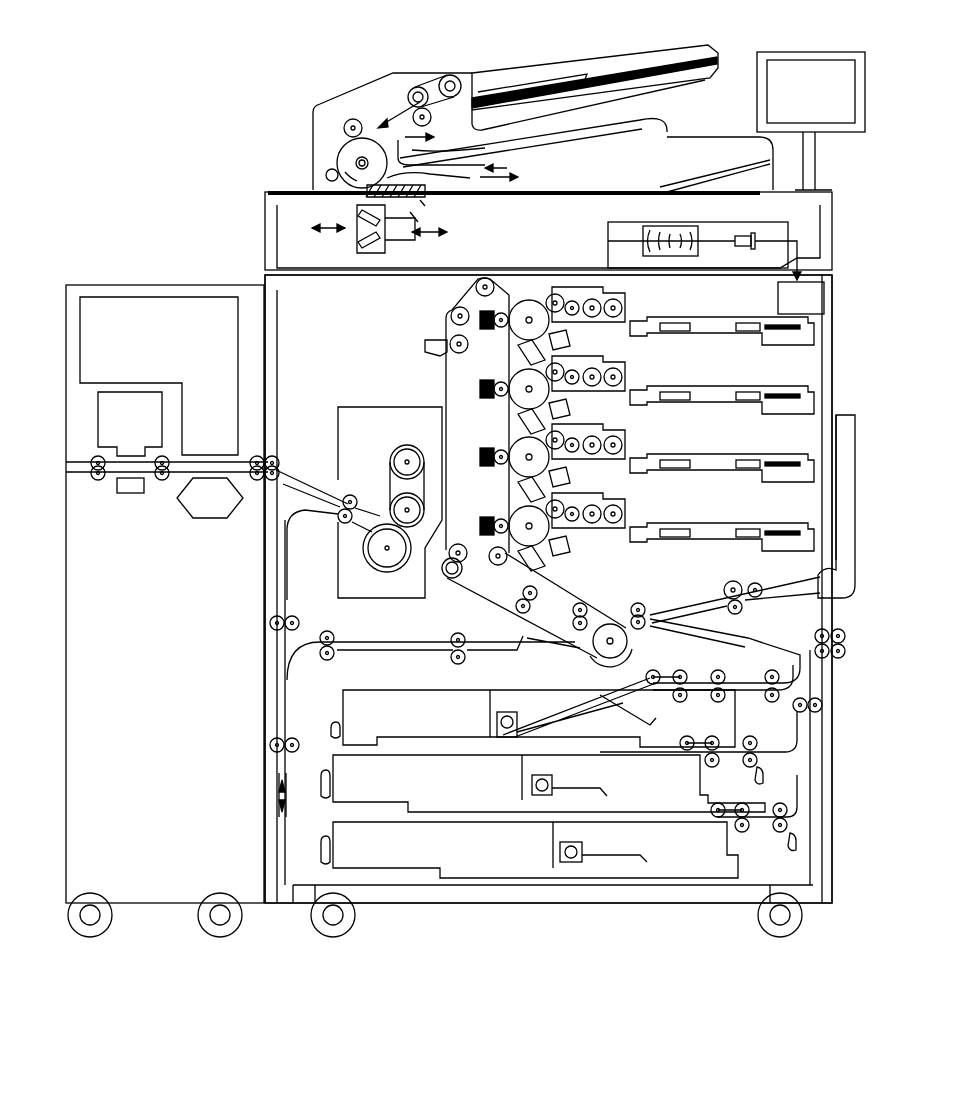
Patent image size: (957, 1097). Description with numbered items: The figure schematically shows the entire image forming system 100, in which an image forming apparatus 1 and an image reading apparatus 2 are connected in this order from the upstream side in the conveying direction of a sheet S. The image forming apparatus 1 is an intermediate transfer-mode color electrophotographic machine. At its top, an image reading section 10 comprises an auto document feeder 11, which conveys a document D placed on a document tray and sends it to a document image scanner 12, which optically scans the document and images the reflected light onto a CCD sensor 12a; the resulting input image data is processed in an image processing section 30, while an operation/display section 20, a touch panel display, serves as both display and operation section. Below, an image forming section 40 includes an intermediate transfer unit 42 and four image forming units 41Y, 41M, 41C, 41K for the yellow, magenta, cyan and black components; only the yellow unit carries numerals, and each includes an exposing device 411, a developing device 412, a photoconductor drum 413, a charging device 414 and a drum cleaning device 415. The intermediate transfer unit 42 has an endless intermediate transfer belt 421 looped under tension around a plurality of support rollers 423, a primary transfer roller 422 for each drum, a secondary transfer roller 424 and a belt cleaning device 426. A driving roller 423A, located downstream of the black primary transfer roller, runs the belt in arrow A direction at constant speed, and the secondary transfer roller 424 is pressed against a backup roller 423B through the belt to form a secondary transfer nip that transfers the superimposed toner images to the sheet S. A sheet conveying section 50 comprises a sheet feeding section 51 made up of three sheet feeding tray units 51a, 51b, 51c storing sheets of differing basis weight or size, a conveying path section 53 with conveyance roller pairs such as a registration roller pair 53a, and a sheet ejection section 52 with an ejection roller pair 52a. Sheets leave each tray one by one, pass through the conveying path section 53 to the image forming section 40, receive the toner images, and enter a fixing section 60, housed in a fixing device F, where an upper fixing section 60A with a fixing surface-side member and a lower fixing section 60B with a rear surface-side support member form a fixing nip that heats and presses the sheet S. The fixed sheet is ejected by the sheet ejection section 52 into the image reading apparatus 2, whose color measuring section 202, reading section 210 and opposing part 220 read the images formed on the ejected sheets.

The image forming system 100 is at (60, 28).
The image forming apparatus 1 is at (531, 46).
The image reading section 10 is at (236, 112).
The auto document feeder 11 is at (312, 143).
The document image scanner 12 is at (297, 190).
The CCD sensor 12a is at (756, 237).
The document D is at (610, 64).
The operation/display section 20 is at (797, 52).
The image processing section 30 is at (824, 290).
The image reading apparatus 2 is at (160, 285).
The color measuring section 202 is at (128, 405).
The reading section 210 is at (205, 318).
The opposing part 220 is at (212, 519).
The image forming section 40 is at (361, 351).
The intermediate transfer unit 42 is at (396, 313).
The intermediate transfer belt 421 is at (440, 400).
The support rollers 423 is at (452, 308).
The driving roller 423A is at (495, 565).
The backup roller 423B is at (456, 562).
The secondary transfer roller 424 is at (447, 576).
The belt cleaning device 426 is at (428, 346).
The photoconductor drum 413 is at (527, 302).
The primary transfer roller 422 is at (495, 334).
The drum cleaning device 415 is at (517, 357).
The charging device 414 is at (568, 339).
The developing device 412 is at (627, 306).
The exposing device 411 is at (702, 318).
The image forming unit for Y component 41Y is at (650, 349).
The image forming unit for M component 41M is at (650, 427).
The image forming unit for C component 41C is at (650, 494).
The image forming unit for K component 41K is at (650, 566).
The arrow A direction A is at (456, 412).
The fixing device F is at (345, 407).
The fixing section 60 is at (380, 395).
The upper fixing section 60A is at (376, 458).
The lower fixing section 60B is at (348, 590).
The sheet ejection section 52 is at (280, 436).
The conveyance roller pair (ejection roller pair) 52a is at (282, 473).
The conveying path section 53 is at (612, 614).
The registration roller pair 53a is at (566, 592).
The sheet conveying section 50 is at (836, 695).
The sheet feeding section 51 is at (427, 681).
The sheet feeding tray unit 51a is at (341, 722).
The sheet feeding tray unit 51b is at (340, 795).
The sheet feeding tray unit 51c is at (340, 858).
The sheet S is at (588, 694).